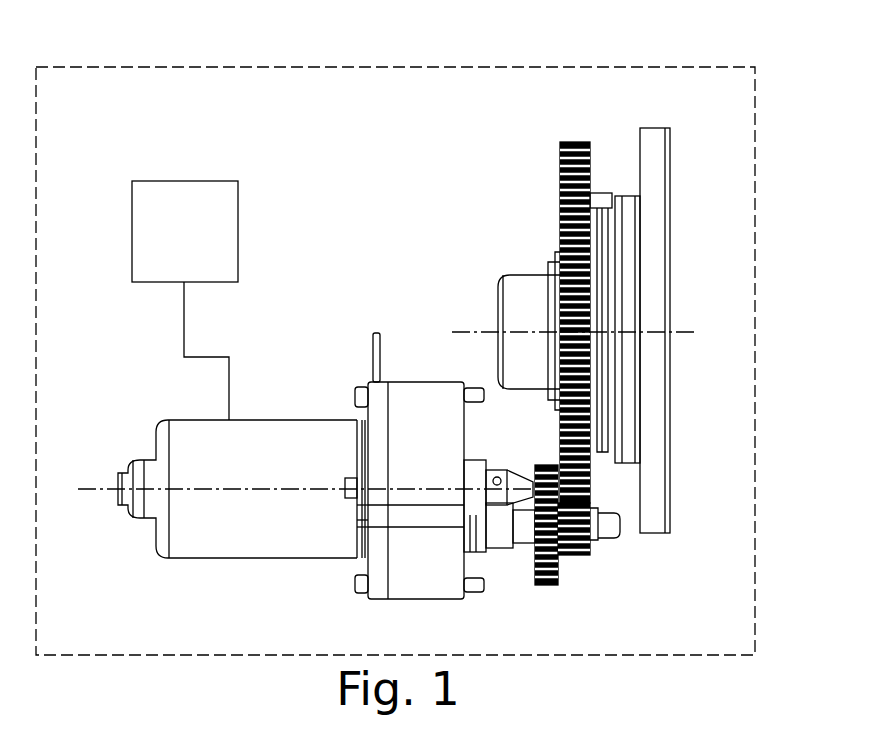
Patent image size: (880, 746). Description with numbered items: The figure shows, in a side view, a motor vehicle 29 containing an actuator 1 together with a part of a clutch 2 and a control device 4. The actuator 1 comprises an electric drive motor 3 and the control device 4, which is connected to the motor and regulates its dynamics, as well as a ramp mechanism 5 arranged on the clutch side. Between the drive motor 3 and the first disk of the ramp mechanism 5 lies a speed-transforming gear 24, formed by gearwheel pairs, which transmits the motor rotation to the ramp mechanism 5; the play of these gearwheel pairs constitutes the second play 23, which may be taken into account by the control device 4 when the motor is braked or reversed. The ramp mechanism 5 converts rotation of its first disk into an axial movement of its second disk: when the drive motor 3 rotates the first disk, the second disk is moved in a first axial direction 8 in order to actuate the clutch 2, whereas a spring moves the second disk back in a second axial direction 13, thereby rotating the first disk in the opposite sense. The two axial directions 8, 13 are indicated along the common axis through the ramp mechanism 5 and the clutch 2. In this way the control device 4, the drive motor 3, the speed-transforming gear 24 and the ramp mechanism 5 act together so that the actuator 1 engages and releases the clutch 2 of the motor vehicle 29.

The motor vehicle 29 is at (722, 67).
The control device 4 is at (153, 198).
The electric drive motor 3 is at (262, 440).
The actuator 1 is at (438, 299).
The ramp mechanism 5 is at (613, 185).
The clutch 2 is at (650, 143).
The second axial direction 13 is at (450, 332).
The first axial direction 8 is at (700, 332).
The speed-transforming gear 24 is at (560, 562).
The second play 23 is at (592, 558).